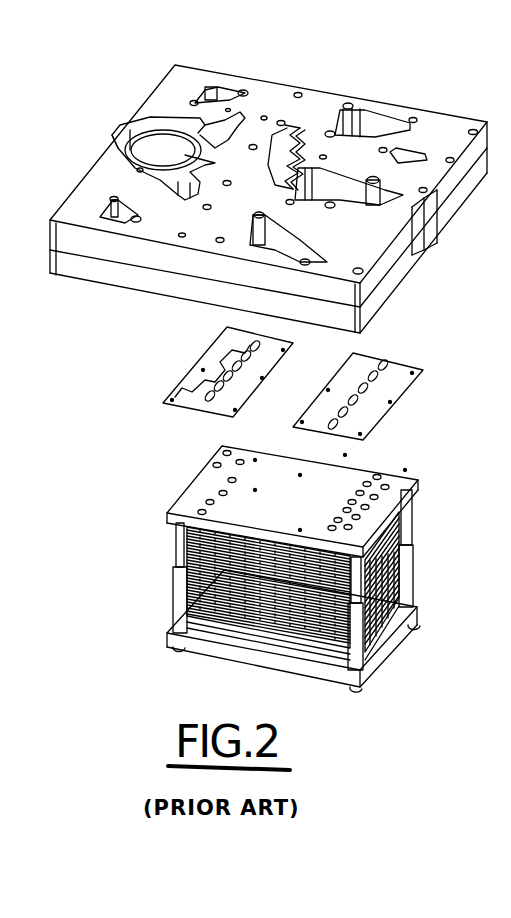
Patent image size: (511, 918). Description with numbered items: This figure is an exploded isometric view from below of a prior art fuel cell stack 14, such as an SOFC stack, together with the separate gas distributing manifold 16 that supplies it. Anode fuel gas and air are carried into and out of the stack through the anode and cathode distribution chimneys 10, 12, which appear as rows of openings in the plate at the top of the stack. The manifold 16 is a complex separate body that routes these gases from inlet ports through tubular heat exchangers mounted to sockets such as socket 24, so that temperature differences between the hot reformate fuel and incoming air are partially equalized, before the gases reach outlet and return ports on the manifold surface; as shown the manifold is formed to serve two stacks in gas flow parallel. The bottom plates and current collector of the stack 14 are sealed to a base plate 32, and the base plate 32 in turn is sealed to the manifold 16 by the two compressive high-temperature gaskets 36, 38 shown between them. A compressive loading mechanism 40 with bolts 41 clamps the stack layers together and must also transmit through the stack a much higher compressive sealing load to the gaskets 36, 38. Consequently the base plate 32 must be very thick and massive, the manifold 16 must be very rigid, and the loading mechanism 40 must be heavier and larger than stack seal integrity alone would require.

The anode distribution chimney 10 is at (311, 486).
The cathode distribution chimney 12 is at (301, 485).
The fuel cell stack 14 is at (281, 566).
The gas distributing manifold 16 is at (90, 265).
The socket 24 is at (0, 519).
The base plate 32 is at (289, 513).
The compressive high-temperature gasket 36 is at (408, 387).
The compressive high-temperature gasket 38 is at (196, 372).
The compressive loading mechanism 40 is at (170, 625).
The bolt 41 is at (176, 600).